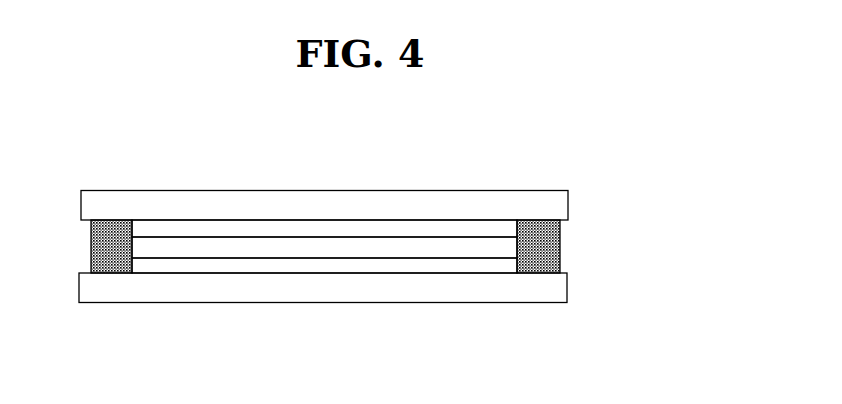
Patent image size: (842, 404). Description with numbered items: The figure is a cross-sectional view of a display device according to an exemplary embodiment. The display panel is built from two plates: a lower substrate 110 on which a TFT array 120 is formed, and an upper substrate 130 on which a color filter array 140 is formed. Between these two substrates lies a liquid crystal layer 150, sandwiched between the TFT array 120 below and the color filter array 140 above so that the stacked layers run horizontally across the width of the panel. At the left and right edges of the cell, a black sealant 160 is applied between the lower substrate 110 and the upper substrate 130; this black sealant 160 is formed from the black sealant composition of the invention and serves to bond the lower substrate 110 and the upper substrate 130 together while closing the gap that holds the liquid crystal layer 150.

The lower substrate 110 is at (558, 288).
The TFT array 120 is at (326, 266).
The upper substrate 130 is at (560, 206).
The color filter (CF) array 140 is at (391, 228).
The liquid crystal layer 150 is at (452, 252).
The black sealant 160 is at (547, 246).